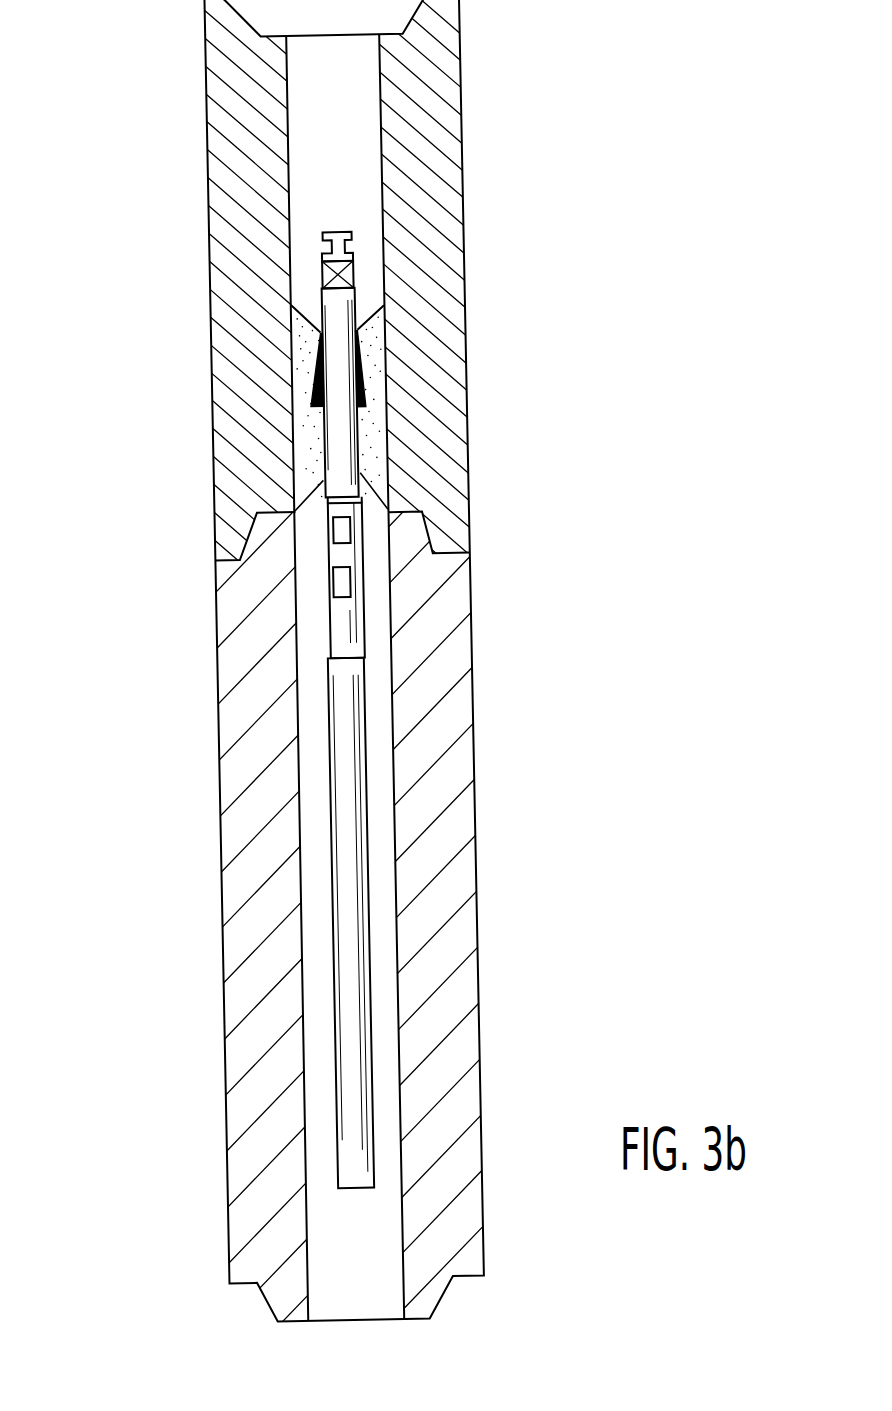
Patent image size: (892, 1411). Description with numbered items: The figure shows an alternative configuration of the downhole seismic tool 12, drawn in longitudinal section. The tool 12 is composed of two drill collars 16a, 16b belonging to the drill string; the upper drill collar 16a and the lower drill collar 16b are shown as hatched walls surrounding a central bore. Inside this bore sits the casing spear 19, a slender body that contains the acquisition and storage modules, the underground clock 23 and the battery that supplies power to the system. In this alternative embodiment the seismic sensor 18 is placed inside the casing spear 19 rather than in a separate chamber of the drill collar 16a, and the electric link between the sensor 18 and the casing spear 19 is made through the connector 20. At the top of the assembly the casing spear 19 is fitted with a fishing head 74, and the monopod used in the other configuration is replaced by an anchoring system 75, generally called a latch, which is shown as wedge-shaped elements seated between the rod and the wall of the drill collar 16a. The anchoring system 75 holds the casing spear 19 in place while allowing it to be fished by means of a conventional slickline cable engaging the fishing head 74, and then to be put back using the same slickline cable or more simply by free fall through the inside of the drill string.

The seismic tool 12 is at (488, 144).
The drill collar 16a is at (235, 84).
The drill collar 16b is at (432, 700).
The connector 20 is at (321, 268).
The fishing head 74 is at (353, 248).
The anchoring system 75 is at (377, 461).
The seismic sensor 18 is at (343, 530).
The underground clock 23 is at (343, 580).
The casing spear 19 is at (345, 915).